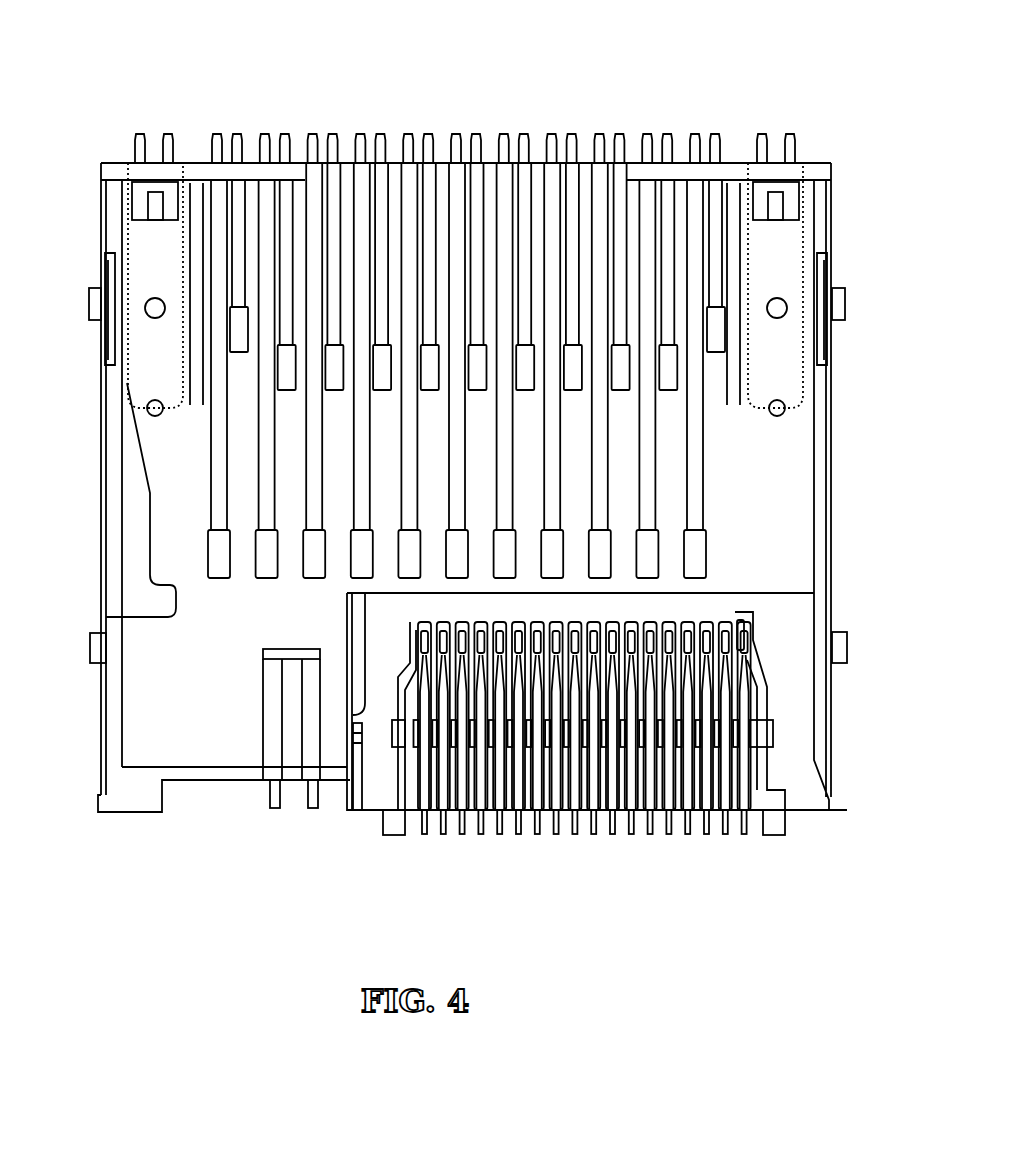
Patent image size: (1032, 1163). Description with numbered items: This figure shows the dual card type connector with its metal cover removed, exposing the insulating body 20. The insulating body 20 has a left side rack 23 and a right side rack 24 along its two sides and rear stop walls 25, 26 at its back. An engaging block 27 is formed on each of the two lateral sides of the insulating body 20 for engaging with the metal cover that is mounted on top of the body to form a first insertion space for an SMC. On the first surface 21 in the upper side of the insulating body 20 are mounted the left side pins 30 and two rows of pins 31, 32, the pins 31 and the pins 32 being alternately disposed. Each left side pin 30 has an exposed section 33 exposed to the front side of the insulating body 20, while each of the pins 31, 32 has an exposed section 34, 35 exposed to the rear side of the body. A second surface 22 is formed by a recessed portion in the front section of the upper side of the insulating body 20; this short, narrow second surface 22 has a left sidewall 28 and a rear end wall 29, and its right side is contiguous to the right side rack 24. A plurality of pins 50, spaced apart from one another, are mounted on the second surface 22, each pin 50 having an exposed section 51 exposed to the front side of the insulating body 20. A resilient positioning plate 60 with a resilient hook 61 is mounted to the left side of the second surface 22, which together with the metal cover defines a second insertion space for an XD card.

The insulating body 20 is at (843, 105).
The first surface 21 is at (172, 688).
The second surface 22 is at (787, 648).
The left side rack 23 is at (101, 793).
The right side rack 24 is at (828, 758).
The rear stop wall 25 is at (197, 165).
The rear stop wall 26 is at (732, 168).
The engaging block 27 is at (92, 296).
The left sidewall 28 is at (345, 615).
The rear end wall 29 is at (772, 593).
The left side pin 30 is at (270, 716).
The pin 31 is at (216, 492).
The pin 32 is at (333, 200).
The exposed section 33 is at (274, 808).
The exposed section 34 is at (400, 150).
The exposed section 35 is at (238, 148).
The pin 50 is at (533, 797).
The exposed section 51 is at (592, 800).
The resilient positioning plate 60 is at (369, 812).
The resilient hook 61 is at (356, 738).